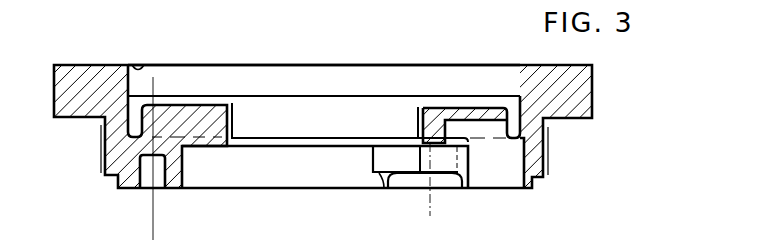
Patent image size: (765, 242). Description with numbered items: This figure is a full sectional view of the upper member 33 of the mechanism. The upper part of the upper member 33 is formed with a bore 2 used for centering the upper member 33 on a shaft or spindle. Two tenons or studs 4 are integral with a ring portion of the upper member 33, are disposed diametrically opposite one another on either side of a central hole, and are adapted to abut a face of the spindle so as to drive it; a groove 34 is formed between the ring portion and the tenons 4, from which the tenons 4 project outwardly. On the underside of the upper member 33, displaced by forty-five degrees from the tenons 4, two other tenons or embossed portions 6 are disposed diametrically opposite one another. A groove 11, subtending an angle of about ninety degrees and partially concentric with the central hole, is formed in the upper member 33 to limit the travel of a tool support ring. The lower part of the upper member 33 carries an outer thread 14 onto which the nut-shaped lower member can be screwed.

The bore 2 is at (143, 66).
The tenons 4 is at (208, 110).
The embossed portions 6 is at (381, 163).
The groove 11 is at (158, 192).
The outer thread 14 is at (102, 157).
The upper member 33 is at (113, 178).
The groove 34 is at (488, 178).